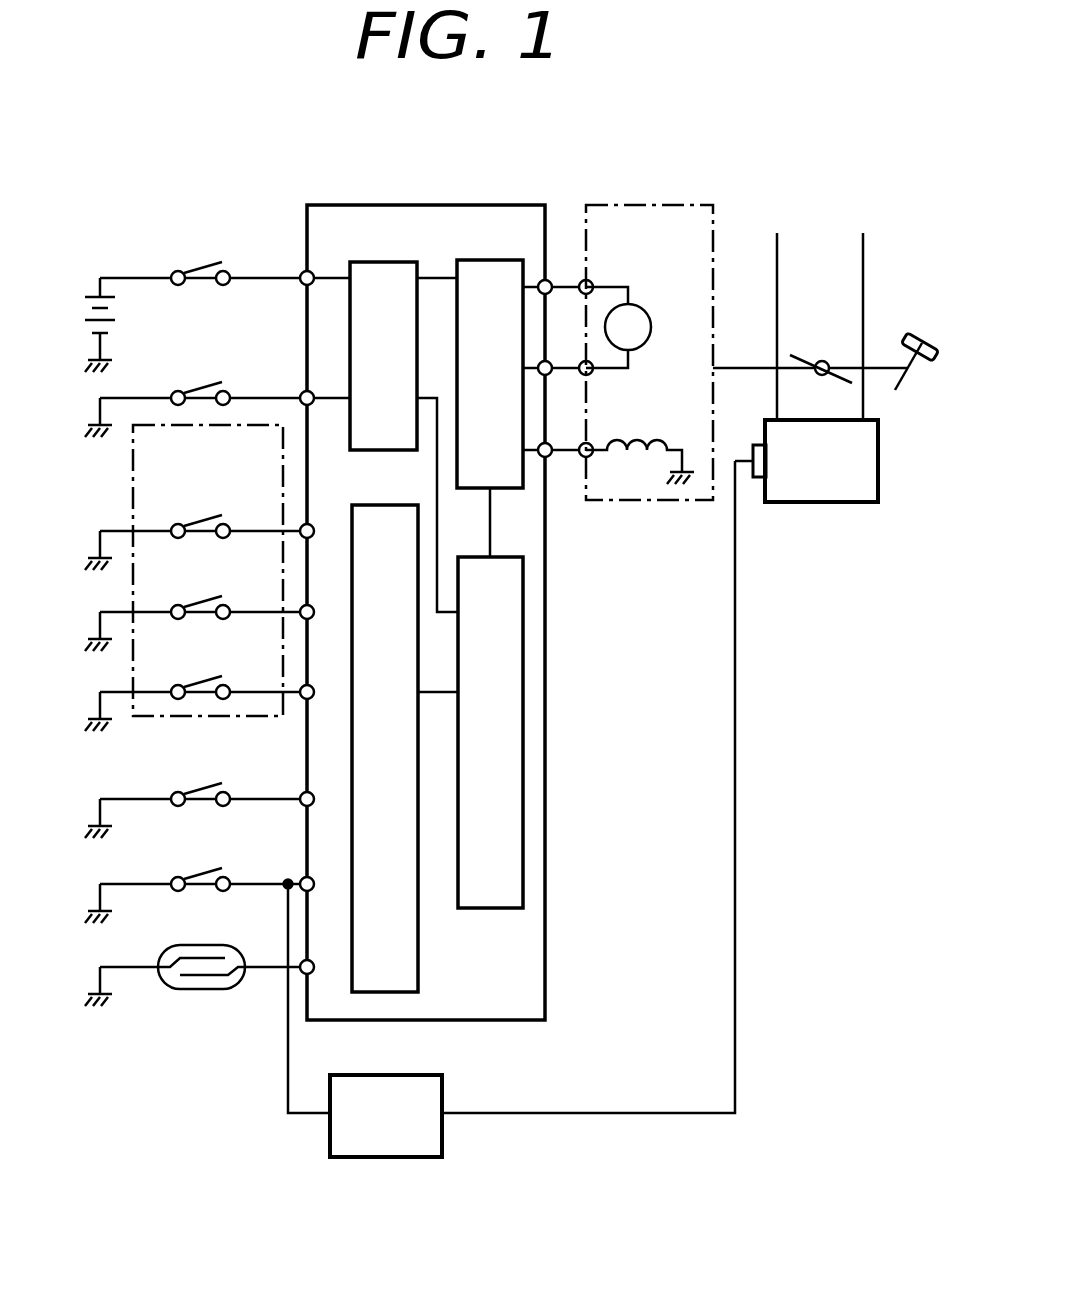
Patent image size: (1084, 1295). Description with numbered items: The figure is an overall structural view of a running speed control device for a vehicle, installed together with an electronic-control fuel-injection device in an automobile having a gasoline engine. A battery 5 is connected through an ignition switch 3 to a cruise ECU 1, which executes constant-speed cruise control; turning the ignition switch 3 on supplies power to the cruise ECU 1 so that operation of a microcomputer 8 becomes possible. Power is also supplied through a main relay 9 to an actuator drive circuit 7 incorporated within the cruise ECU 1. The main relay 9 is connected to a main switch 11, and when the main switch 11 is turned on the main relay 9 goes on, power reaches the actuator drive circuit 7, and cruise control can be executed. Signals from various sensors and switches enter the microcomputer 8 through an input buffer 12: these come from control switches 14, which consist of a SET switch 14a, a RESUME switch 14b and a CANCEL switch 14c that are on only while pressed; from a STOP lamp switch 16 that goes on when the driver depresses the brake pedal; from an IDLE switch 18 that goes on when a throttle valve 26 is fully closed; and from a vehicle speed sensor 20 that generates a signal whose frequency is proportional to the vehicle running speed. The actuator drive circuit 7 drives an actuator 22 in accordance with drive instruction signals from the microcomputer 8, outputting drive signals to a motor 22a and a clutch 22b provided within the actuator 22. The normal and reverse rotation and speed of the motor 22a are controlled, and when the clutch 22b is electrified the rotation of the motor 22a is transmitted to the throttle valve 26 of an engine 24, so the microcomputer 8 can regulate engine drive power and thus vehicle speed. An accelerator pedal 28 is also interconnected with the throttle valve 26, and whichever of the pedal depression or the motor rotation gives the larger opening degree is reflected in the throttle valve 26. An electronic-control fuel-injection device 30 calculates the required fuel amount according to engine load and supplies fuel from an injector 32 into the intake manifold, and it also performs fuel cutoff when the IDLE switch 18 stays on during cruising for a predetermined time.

The cruise ECU 1 is at (497, 205).
The ignition switch 3 is at (190, 268).
The battery 5 is at (122, 316).
The actuator drive circuit 7 is at (505, 490).
The microcomputer 8 is at (498, 908).
The main relay 9 is at (387, 451).
The main switch 11 is at (196, 390).
The input buffer 12 is at (418, 968).
The control switches 14 is at (133, 470).
The SET switch 14a is at (200, 524).
The RESUME switch 14b is at (200, 605).
The CANCEL switch 14c is at (200, 685).
The STOP lamp switch 16 is at (198, 792).
The IDLE switch 18 is at (198, 877).
The vehicle speed sensor 20 is at (196, 945).
The actuator 22 is at (665, 205).
The motor 22a is at (648, 312).
The clutch 22b is at (652, 438).
The engine 24 is at (878, 482).
The throttle valve 26 is at (805, 355).
The accelerator pedal 28 is at (919, 336).
The electronic-control fuel-injection device 30 is at (442, 1082).
The injector 32 is at (758, 478).